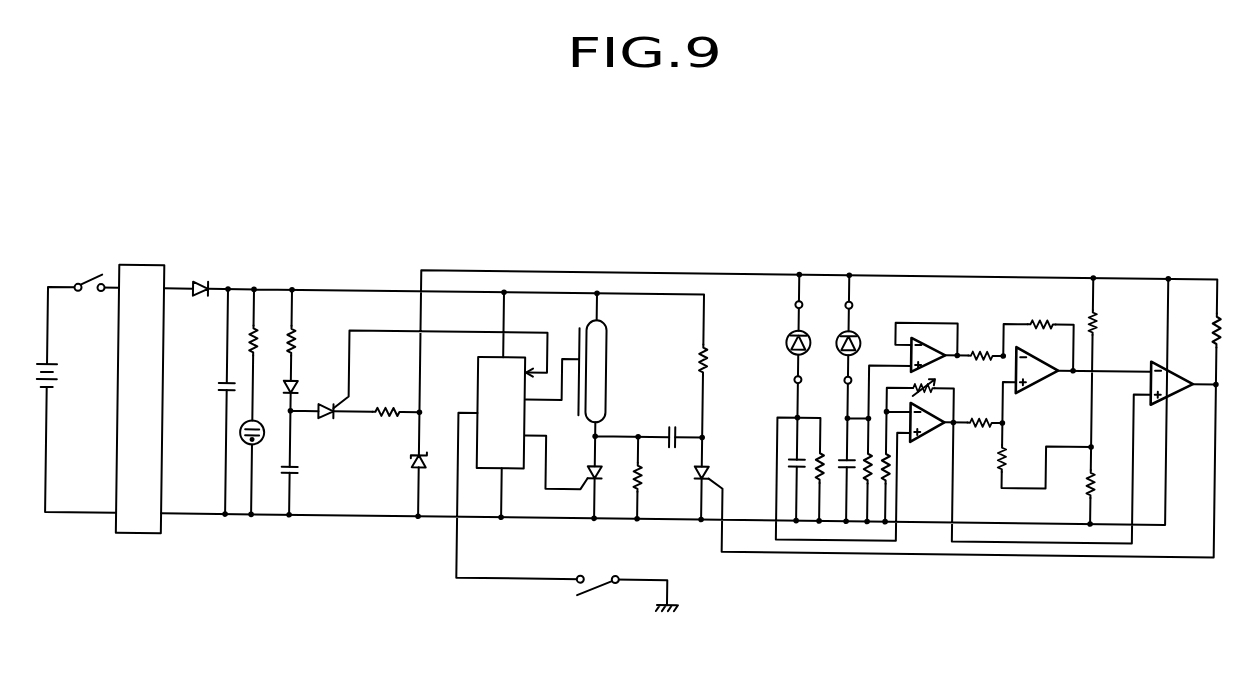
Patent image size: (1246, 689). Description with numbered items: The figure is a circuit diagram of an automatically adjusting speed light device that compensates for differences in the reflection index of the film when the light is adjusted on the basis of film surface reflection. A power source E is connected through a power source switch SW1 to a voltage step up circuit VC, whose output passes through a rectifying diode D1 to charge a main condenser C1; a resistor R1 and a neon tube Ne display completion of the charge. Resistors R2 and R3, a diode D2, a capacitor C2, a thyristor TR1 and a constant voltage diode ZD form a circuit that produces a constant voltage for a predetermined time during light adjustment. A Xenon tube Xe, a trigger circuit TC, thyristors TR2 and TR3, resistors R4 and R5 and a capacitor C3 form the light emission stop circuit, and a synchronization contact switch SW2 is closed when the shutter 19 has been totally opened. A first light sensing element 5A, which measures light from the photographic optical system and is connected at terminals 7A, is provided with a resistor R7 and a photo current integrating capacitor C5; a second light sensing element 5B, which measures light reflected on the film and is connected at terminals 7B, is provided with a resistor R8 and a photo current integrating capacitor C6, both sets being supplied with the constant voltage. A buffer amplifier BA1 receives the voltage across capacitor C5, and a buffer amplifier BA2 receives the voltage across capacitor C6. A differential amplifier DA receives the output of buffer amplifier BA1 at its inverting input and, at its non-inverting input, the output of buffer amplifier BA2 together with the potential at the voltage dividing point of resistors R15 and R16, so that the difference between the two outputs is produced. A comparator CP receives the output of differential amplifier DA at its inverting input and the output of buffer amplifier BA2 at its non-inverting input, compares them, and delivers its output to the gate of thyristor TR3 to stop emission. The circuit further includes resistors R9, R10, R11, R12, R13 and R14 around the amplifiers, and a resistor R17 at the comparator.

The power source switch SW1 is at (89, 270).
The power source E is at (53, 379).
The voltage step up circuit VC is at (140, 399).
The rectifying diode D1 is at (201, 273).
The main condenser C1 is at (218, 386).
The resistor R1 is at (263, 340).
The neon tube Ne is at (263, 433).
The resistor R2 is at (301, 341).
The diode D2 is at (300, 388).
The capacitor C2 is at (299, 471).
The thyristor TR1 is at (325, 426).
The resistor R3 is at (387, 398).
The constant voltage diode ZD is at (430, 458).
The trigger circuit TC is at (501, 413).
The Xenon tube Xe is at (605, 371).
The thyristor TR2 is at (581, 471).
The resistor R5 is at (646, 478).
The capacitor C3 is at (674, 425).
The resistor R4 is at (714, 363).
The thyristor TR3 is at (688, 471).
The connection terminals 7B is at (797, 368).
The second light sensing element 5B is at (788, 344).
The connection terminals 7A is at (849, 369).
The first light sensing element 5A is at (860, 344).
The photo current integrating capacitor C6 is at (792, 454).
The resistor R8 is at (820, 470).
The photo current integrating capacitor C5 is at (846, 466).
The resistor R7 is at (868, 470).
The resistor R9 is at (889, 456).
The buffer amplifier BA1 is at (924, 330).
The buffer amplifier BA2 is at (931, 430).
The resistor R10 is at (942, 374).
The resistor R11 is at (980, 410).
The resistor R13 is at (981, 343).
The resistor R14 is at (1042, 312).
The differential amplifier DA is at (1041, 372).
The resistor R12 is at (1015, 460).
The resistor R15 is at (1105, 325).
The resistor R16 is at (1104, 487).
The comparator CP is at (1174, 382).
The resistor R17 is at (1204, 330).
The synchronization contact switch SW2 is at (598, 573).
The shutter 19 is at (603, 607).